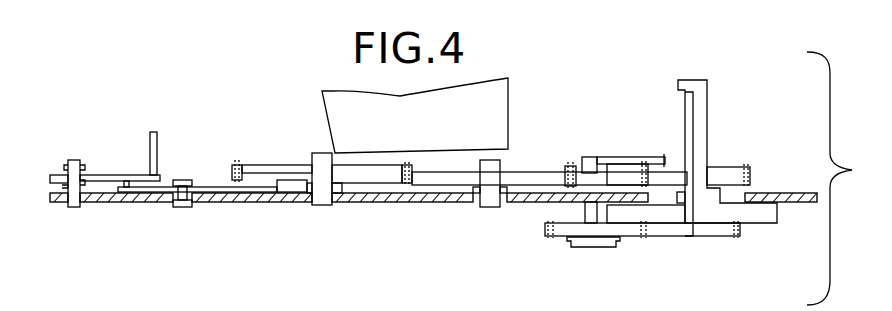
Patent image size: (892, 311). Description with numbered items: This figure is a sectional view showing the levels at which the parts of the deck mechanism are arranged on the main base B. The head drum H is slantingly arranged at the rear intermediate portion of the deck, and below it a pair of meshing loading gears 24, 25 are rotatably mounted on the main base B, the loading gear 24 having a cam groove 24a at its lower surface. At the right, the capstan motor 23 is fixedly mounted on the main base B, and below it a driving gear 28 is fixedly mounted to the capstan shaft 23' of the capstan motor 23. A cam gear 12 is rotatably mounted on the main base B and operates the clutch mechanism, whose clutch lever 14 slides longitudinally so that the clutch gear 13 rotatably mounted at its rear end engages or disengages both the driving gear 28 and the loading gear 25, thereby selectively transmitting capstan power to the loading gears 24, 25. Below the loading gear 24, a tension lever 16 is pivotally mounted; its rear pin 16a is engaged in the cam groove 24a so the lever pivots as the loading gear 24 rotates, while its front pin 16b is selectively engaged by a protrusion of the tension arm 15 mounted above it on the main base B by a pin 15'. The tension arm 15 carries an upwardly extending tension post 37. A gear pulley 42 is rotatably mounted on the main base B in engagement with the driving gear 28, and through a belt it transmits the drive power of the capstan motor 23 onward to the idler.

The cam gear 12 is at (735, 175).
The clutch gear 13 is at (588, 172).
The clutch lever 14 is at (636, 156).
The tension arm 15 is at (120, 137).
The pin 15' is at (62, 155).
The tension lever 16 is at (212, 193).
The pin 16a is at (280, 197).
The pin 16b is at (127, 197).
The capstan motor 23 is at (657, 254).
The capstan shaft 23' is at (697, 142).
The loading gear 24 is at (367, 184).
The cam groove 24a is at (278, 187).
The loading gear 25 is at (532, 186).
The driving gear 28 is at (682, 237).
The tension post 37 is at (153, 131).
The gear pulley 42 is at (588, 248).
The head drum H is at (510, 100).
The main base B is at (432, 204).